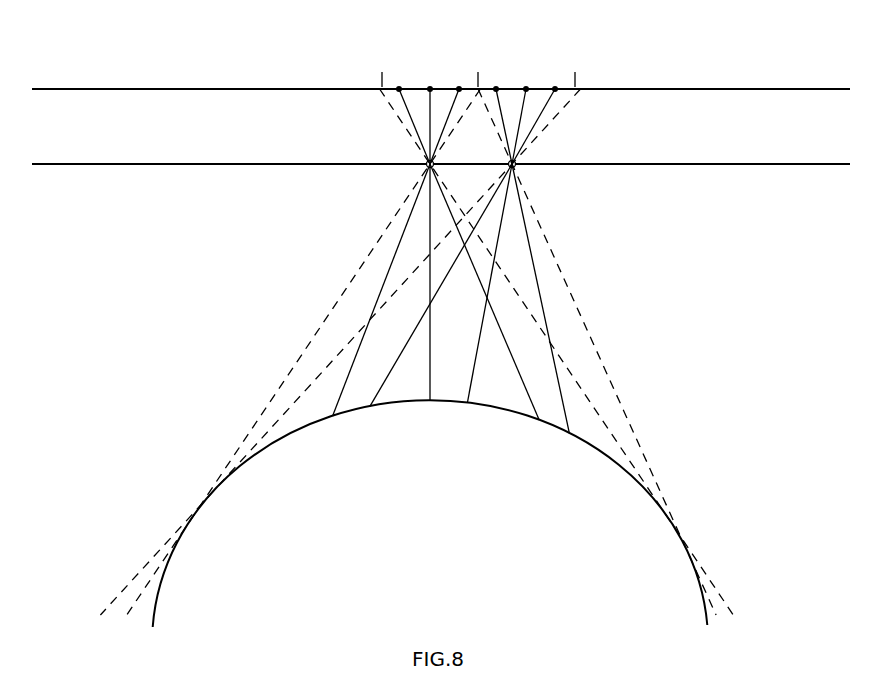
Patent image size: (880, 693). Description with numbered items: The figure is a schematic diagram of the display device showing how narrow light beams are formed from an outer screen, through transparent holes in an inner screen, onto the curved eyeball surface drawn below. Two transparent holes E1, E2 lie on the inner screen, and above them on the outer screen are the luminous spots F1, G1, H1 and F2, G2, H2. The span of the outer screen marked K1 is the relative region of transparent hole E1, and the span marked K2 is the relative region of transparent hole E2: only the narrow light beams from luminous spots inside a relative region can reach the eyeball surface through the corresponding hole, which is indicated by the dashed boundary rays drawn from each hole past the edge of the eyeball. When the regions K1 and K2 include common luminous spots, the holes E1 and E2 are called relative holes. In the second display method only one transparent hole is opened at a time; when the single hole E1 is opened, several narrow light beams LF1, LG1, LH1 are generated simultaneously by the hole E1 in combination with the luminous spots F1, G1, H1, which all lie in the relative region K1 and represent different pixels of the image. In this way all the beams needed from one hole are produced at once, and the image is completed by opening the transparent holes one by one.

The relative region K1 is at (473, 60).
The relative region K2 is at (573, 60).
The luminous spot F1 is at (413, 115).
The luminous spot G1 is at (430, 115).
The luminous spot H1 is at (449, 115).
The luminous spot F2 is at (500, 115).
The luminous spot G2 is at (523, 115).
The luminous spot H2 is at (540, 115).
The transparent hole E1 is at (405, 178).
The transparent hole E2 is at (532, 178).
The narrow light beam LF1 is at (484, 292).
The narrow light beam LG1 is at (443, 282).
The narrow light beam LH1 is at (381, 290).